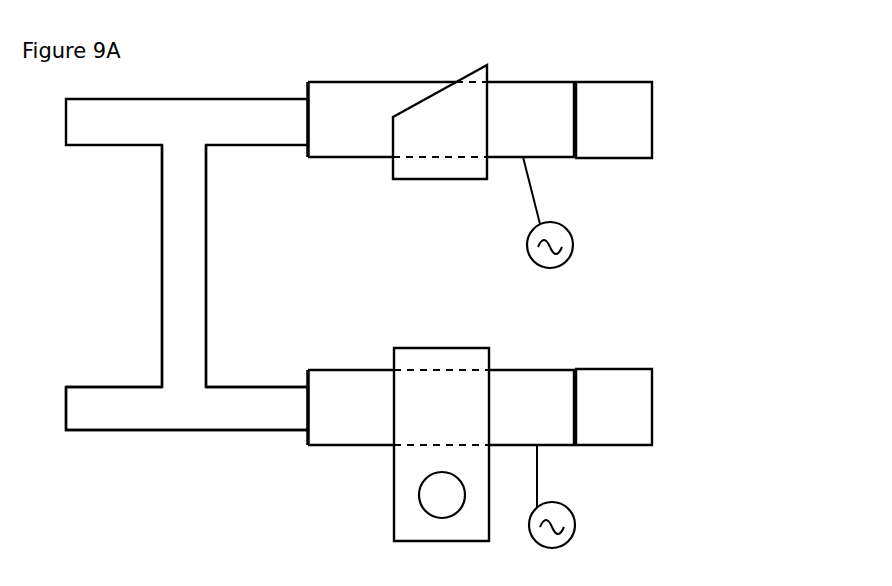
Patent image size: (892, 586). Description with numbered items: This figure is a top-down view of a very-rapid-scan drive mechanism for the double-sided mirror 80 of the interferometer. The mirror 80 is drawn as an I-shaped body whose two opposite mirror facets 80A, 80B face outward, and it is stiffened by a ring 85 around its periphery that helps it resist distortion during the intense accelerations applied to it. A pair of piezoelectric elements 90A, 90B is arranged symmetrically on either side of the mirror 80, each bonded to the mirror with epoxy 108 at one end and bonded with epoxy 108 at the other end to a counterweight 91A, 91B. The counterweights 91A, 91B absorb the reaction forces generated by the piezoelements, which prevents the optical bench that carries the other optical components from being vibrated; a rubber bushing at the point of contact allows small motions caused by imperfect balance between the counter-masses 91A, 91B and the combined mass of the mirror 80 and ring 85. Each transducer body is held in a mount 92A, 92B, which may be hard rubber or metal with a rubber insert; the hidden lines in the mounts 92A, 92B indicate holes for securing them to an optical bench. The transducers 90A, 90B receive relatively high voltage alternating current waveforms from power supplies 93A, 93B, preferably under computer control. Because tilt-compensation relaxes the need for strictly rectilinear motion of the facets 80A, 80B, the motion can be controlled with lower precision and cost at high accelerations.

The double-sided mirror 80 is at (185, 294).
The mirror facet 80A is at (162, 308).
The mirror facet 80B is at (206, 272).
The ring 85 is at (130, 408).
The epoxy 108 is at (305, 148).
The piezoelectric element 90A is at (528, 142).
The piezoelectric element 90B is at (525, 393).
The counterweight 91A is at (615, 118).
The counterweight 91B is at (625, 400).
The mount 92A is at (450, 130).
The mount 92B is at (439, 405).
The power supply 93A is at (527, 247).
The power supply 93B is at (577, 523).